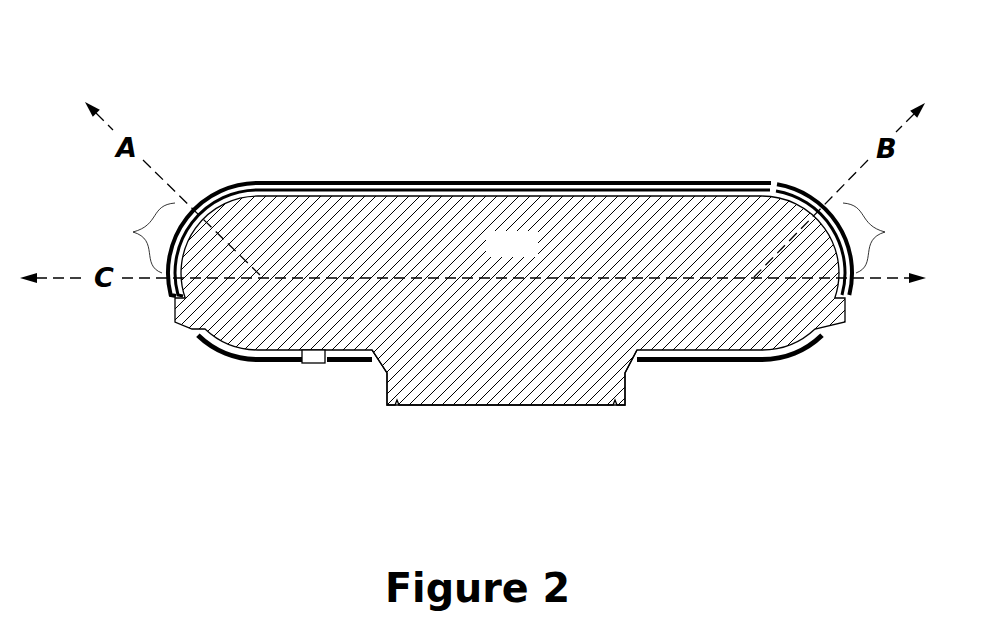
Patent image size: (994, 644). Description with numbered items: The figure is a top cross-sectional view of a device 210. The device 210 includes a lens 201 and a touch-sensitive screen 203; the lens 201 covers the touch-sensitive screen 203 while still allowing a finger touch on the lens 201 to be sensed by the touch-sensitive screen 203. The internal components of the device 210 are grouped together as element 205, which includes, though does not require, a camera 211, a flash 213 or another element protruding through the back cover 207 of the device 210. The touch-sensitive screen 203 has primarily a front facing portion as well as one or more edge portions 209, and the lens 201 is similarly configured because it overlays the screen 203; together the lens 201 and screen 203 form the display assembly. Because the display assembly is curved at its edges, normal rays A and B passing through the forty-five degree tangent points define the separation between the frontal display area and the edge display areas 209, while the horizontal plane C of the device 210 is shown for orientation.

The lens 201 is at (514, 184).
The touch-sensitive screen 203 is at (438, 191).
The internal components 205 is at (510, 300).
The back cover 207 is at (710, 361).
The edge portions 209 is at (510, 238).
The device 210 is at (368, 80).
The camera 211 is at (543, 390).
The flash 213 is at (313, 365).